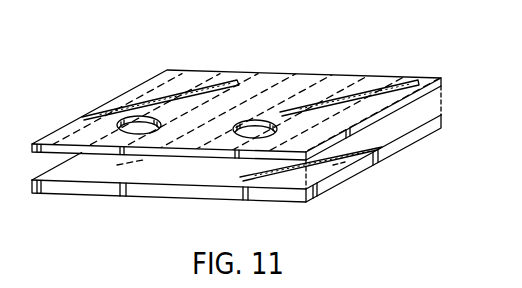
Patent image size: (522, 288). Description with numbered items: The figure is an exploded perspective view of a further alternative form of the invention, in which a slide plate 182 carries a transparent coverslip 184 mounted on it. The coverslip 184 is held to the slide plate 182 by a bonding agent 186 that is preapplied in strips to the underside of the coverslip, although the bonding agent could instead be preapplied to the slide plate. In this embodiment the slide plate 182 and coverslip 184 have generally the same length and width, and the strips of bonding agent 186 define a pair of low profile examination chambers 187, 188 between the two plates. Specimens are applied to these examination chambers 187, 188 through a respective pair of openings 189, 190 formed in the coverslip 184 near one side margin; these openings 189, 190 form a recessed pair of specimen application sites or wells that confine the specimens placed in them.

The slide plate 182 is at (333, 163).
The transparent coverslip 184 is at (386, 80).
The bonding agent 186 is at (262, 104).
The examination chamber 187 is at (101, 161).
The examination chamber 188 is at (288, 174).
The opening 189 is at (132, 118).
The opening 190 is at (262, 121).